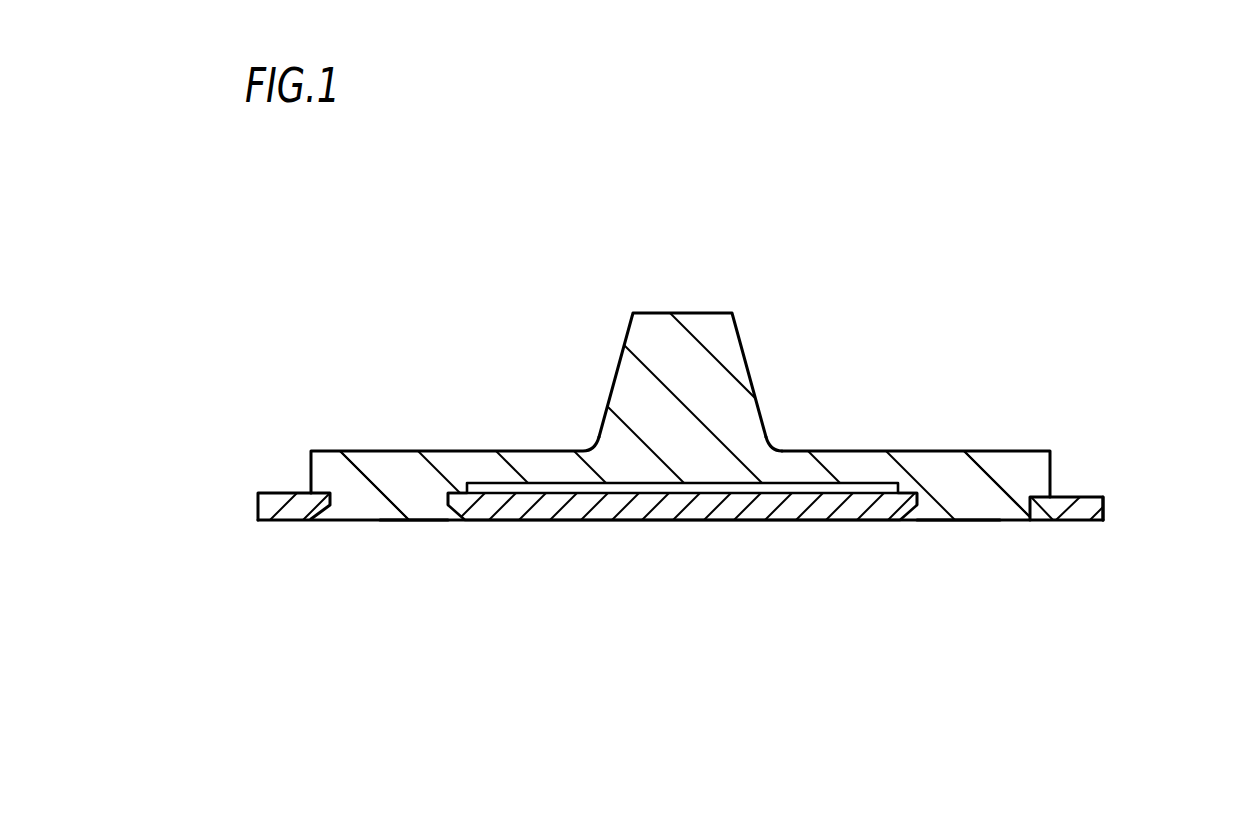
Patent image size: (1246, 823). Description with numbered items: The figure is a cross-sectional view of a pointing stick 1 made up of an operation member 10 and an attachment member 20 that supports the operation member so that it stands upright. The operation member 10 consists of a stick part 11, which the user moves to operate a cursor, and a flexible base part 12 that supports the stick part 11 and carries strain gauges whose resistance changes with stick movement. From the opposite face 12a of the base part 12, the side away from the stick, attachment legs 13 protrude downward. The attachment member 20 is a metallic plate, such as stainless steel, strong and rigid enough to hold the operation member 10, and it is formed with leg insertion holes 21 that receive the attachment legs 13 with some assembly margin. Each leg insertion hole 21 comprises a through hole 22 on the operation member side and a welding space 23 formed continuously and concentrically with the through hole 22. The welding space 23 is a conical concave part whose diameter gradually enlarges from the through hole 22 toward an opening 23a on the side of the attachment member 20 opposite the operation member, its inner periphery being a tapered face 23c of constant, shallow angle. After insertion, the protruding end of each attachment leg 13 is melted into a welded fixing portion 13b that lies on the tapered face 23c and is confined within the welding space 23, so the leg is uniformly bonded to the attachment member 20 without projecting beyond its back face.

The pointing stick 1 is at (717, 263).
The operation member 10 is at (762, 417).
The stick part 11 is at (742, 342).
The flexible base part 12 is at (973, 453).
The opposite face of the base part 12a is at (1092, 522).
The attachment leg 13 is at (432, 522).
The welded fixing portion 13b is at (382, 524).
The attachment member 20 is at (1104, 518).
The leg insertion hole 21 is at (340, 524).
The through hole 22 is at (368, 497).
The welding space 23 is at (296, 697).
The opening 23a is at (313, 525).
The tapered face 23c is at (447, 524).